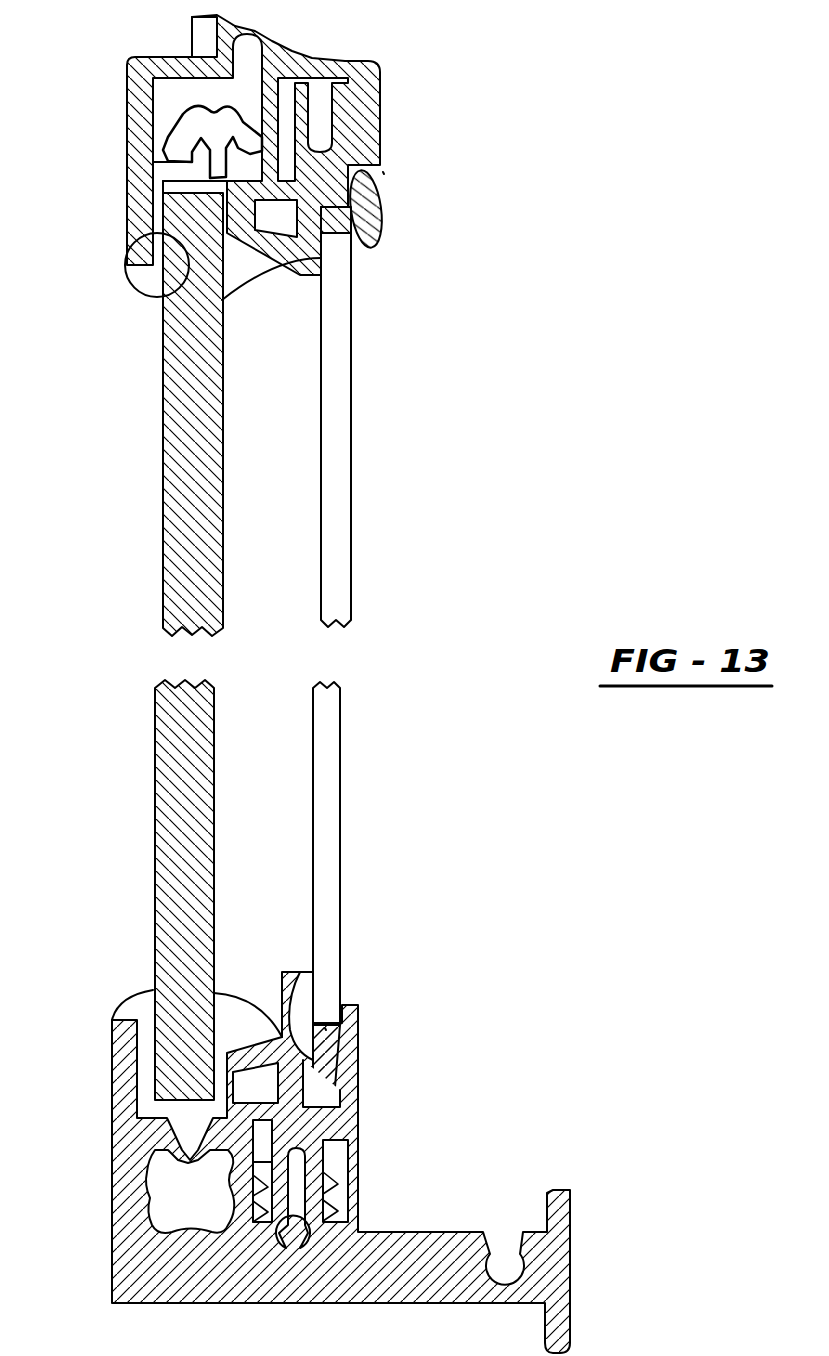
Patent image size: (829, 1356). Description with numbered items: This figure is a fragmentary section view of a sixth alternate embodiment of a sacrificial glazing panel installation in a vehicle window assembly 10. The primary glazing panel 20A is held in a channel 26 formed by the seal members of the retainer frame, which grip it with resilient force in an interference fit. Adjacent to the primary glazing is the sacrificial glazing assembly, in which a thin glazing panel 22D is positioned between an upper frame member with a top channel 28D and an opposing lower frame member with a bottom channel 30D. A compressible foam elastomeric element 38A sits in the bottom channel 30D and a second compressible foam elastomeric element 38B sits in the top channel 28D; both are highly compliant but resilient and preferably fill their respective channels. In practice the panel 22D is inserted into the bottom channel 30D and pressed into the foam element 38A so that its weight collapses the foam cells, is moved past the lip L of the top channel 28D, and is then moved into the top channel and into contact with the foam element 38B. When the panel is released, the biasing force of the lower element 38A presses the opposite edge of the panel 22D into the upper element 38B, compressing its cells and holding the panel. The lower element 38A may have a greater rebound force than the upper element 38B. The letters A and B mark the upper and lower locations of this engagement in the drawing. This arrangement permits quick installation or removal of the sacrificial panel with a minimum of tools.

The vehicle window assembly 10 is at (137, 856).
The primary glazing panel 20A is at (116, 646).
The glazing panel 22D is at (340, 506).
The channel 26 is at (163, 300).
The top channel 28D is at (352, 255).
The bottom channel 30D is at (337, 1088).
The compressible foam elastomeric element 38A is at (297, 1040).
The compressible foam elastomeric element 38B is at (383, 207).
The point A is at (383, 172).
The point B is at (325, 1028).
The lip L is at (380, 226).